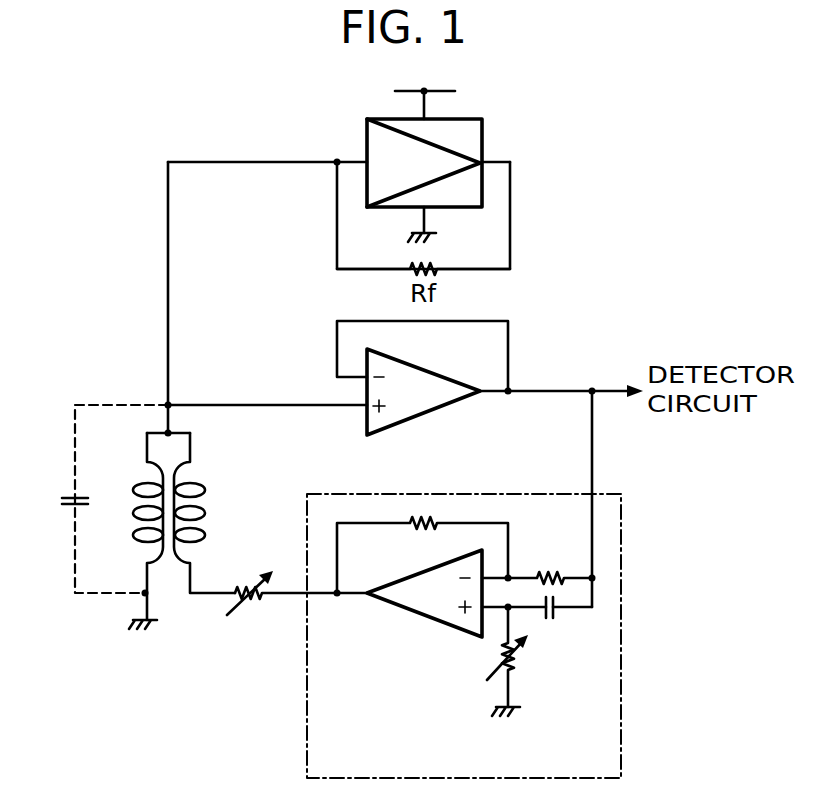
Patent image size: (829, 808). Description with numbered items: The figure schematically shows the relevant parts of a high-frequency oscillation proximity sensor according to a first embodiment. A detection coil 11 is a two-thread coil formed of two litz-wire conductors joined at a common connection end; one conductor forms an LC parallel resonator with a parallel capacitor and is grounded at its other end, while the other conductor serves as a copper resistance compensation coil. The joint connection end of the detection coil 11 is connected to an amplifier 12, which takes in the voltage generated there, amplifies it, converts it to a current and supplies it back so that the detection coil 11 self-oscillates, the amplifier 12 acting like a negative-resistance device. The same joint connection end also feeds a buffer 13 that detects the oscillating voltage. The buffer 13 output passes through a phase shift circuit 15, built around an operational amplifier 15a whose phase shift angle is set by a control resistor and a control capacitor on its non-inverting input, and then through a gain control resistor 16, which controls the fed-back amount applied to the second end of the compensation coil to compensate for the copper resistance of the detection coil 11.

The detection coil 11 is at (222, 481).
The amplifier 12 is at (482, 132).
The buffer 13 is at (430, 413).
The phase shift circuit 15 is at (353, 494).
The operational amplifier 15a is at (415, 615).
The gain control resistor 16 is at (254, 585).